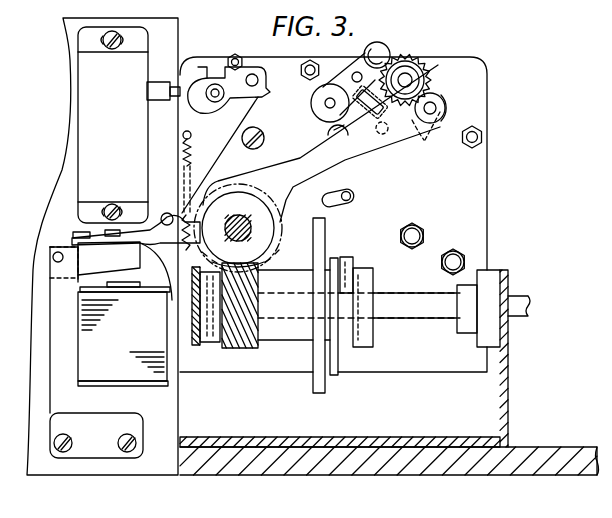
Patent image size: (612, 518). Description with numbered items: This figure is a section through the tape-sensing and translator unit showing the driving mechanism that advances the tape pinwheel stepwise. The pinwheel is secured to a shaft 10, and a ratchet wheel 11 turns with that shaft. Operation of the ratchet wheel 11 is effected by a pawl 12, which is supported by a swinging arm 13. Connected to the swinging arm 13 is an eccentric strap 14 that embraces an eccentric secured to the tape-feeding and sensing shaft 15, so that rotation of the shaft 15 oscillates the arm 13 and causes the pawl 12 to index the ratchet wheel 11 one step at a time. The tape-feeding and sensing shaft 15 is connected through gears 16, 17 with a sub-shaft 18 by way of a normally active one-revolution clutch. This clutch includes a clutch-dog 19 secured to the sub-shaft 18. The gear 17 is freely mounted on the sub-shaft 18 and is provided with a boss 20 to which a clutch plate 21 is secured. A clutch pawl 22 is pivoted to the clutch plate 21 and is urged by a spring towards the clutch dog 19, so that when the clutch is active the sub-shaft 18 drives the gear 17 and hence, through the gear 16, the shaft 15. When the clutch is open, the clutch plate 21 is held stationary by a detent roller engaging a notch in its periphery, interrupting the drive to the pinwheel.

The shaft 10 is at (405, 82).
The ratchet wheel 11 is at (390, 95).
The pawl 12 is at (410, 120).
The swinging arm 13 is at (447, 98).
The eccentric strap 14 is at (343, 152).
The tape-feeding and sensing shaft 15 is at (255, 228).
The gear 16 is at (272, 256).
The gear 17 is at (240, 348).
The sub-shaft 18 is at (432, 308).
The clutch-dog 19 is at (363, 282).
The boss 20 is at (288, 333).
The clutch plate 21 is at (317, 377).
The clutch pawl 22 is at (337, 373).